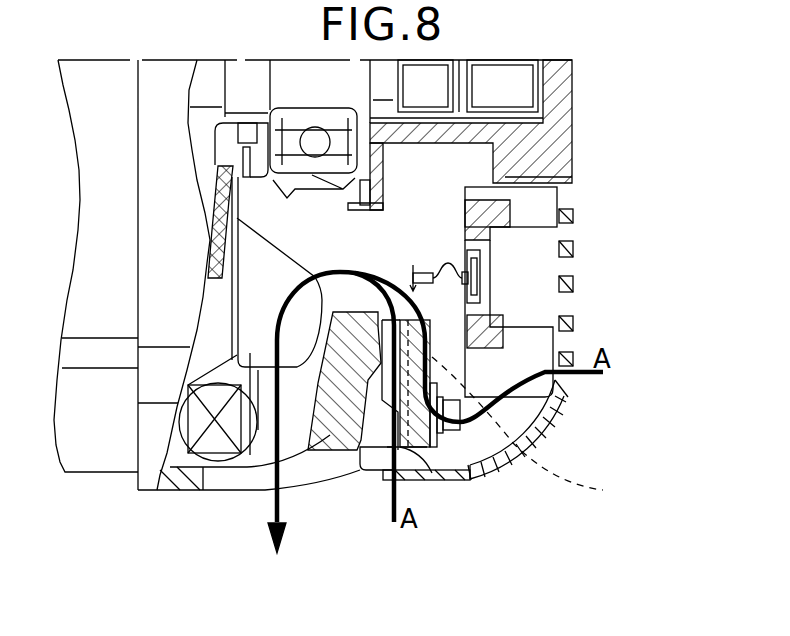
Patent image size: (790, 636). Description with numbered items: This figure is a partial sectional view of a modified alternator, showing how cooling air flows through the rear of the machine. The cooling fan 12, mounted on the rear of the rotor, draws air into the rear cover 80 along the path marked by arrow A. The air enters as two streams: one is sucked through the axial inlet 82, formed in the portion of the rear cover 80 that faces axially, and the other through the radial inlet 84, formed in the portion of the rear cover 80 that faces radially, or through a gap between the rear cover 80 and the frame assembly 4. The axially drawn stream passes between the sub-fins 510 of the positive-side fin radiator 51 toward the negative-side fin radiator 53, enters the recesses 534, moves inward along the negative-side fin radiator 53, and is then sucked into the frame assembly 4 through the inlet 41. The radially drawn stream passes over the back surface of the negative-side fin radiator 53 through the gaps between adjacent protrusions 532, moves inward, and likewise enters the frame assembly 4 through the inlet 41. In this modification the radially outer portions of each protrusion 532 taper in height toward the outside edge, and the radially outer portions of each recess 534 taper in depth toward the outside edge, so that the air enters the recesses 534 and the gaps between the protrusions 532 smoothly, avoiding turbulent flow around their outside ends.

The frame assembly 4 is at (170, 483).
The cooling fan 12 is at (240, 440).
The inlet 41 is at (365, 247).
The positive-side fin radiator 51 is at (505, 340).
The negative-side fin radiator 53 is at (380, 457).
The protrusion 532 is at (375, 460).
The recess 534 is at (552, 431).
The rear cover 80 is at (473, 480).
The axial inlet 82 is at (568, 380).
The radial inlet 84 is at (410, 470).
The sub-fins 510 is at (567, 397).